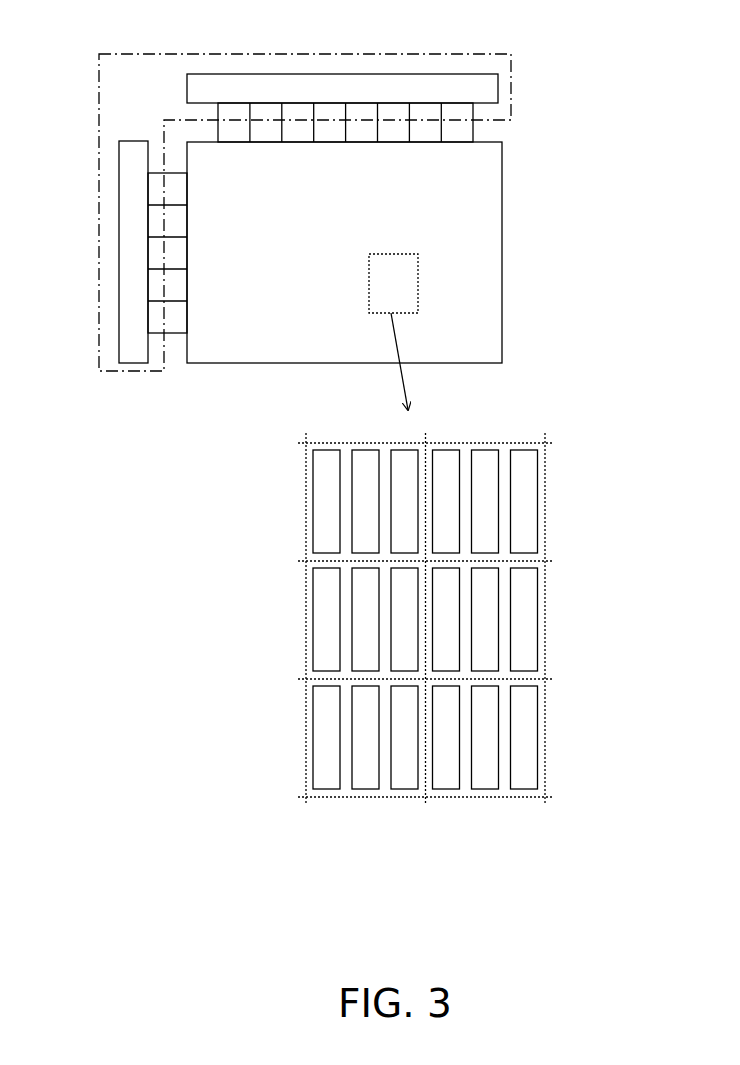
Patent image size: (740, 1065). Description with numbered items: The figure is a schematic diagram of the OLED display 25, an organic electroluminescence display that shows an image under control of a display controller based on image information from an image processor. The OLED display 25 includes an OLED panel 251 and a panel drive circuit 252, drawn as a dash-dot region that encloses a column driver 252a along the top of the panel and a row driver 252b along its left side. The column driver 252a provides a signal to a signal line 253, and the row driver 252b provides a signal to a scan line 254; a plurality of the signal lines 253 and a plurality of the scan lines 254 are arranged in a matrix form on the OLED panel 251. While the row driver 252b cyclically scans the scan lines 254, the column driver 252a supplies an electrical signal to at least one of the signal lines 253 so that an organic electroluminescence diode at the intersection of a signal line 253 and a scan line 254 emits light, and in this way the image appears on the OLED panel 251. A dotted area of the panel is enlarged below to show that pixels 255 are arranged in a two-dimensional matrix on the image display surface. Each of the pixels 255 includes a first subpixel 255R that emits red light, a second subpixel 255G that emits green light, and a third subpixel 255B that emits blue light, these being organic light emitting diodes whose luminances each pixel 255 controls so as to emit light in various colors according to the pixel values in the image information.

The OLED display 25 is at (557, 43).
The OLED panel 251 is at (502, 222).
The panel drive circuit 252 is at (158, 53).
The column driver 252a is at (498, 88).
The row driver 252b is at (121, 218).
The signal line 253 is at (473, 133).
The scan line 254 is at (170, 335).
The pixel 255 is at (375, 653).
The third subpixel 255B is at (320, 789).
The second subpixel 255G is at (368, 789).
The first subpixel 255R is at (413, 789).